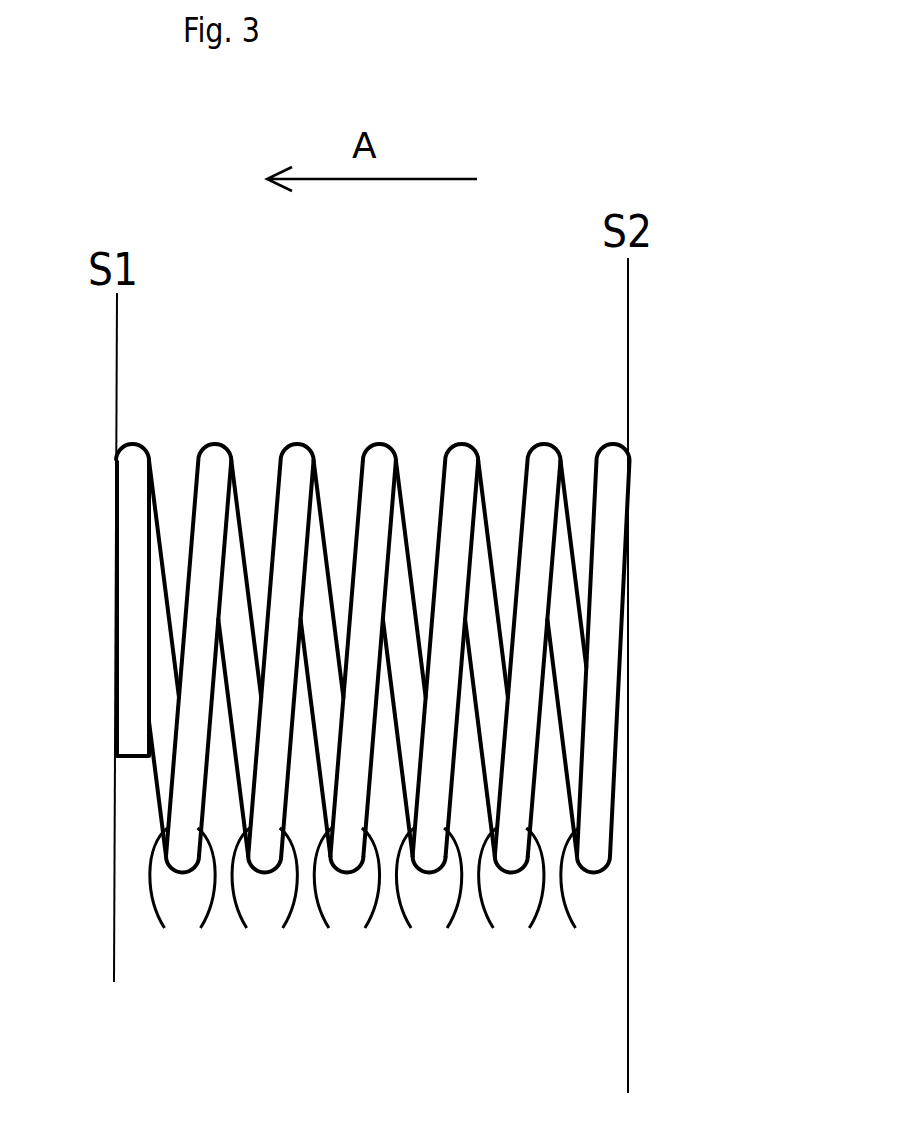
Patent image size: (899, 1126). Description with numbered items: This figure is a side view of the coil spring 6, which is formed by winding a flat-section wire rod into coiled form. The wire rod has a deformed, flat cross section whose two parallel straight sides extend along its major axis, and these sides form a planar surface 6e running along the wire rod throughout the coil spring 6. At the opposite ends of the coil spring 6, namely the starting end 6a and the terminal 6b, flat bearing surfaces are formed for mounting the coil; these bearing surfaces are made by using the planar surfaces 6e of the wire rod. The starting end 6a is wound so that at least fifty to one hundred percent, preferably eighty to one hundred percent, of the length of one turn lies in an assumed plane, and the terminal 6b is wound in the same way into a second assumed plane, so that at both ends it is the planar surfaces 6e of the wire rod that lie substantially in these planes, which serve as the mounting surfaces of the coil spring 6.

The coil spring 6 is at (380, 458).
The starting end 6a is at (128, 590).
The terminal 6b is at (608, 608).
The planar surface 6e is at (112, 712).